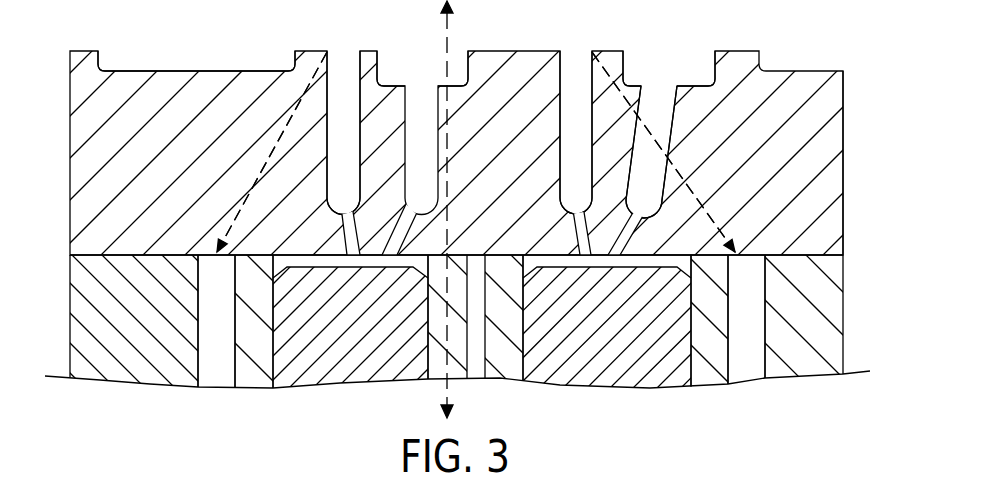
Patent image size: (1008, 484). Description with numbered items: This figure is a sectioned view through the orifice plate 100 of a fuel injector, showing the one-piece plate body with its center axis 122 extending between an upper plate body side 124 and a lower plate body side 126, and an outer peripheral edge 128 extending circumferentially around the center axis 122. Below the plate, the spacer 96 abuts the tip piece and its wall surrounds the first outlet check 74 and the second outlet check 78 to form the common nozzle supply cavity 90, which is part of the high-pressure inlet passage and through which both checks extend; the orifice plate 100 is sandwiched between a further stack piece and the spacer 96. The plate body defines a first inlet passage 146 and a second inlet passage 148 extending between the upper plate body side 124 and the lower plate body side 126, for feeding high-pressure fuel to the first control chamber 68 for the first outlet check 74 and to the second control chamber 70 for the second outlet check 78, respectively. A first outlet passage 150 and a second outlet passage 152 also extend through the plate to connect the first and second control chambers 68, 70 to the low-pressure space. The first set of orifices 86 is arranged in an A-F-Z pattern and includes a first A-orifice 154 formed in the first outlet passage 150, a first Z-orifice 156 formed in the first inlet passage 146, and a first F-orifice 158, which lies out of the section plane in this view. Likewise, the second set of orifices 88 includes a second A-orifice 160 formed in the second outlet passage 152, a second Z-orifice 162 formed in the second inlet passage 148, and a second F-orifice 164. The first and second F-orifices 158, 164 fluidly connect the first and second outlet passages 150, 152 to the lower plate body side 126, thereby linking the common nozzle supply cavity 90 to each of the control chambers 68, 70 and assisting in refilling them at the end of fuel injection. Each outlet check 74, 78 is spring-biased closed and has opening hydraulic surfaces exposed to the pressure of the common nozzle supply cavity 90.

The orifice plate 100 is at (818, 84).
The center axis 122 is at (450, 33).
The upper plate body side 124 is at (279, 52).
The lower plate body side 126 is at (782, 260).
The outer peripheral edge 128 is at (846, 171).
The first inlet passage 146 is at (416, 88).
The second inlet passage 148 is at (676, 100).
The first outlet passage 150 is at (335, 70).
The second outlet passage 152 is at (586, 66).
The first A-orifice 154 is at (345, 240).
The first Z-orifice 156 is at (400, 232).
The first F-orifice 158 is at (258, 178).
The second A-orifice 160 is at (576, 242).
The second Z-orifice 162 is at (633, 232).
The second F-orifice 164 is at (678, 170).
The first set of orifices 86 is at (263, 150).
The second set of orifices 88 is at (678, 153).
The first control chamber 68 is at (277, 258).
The second control chamber 70 is at (535, 258).
The first outlet check 74 is at (349, 311).
The second outlet check 78 is at (611, 311).
The common nozzle supply cavity 90 is at (222, 372).
The spacer 96 is at (76, 272).